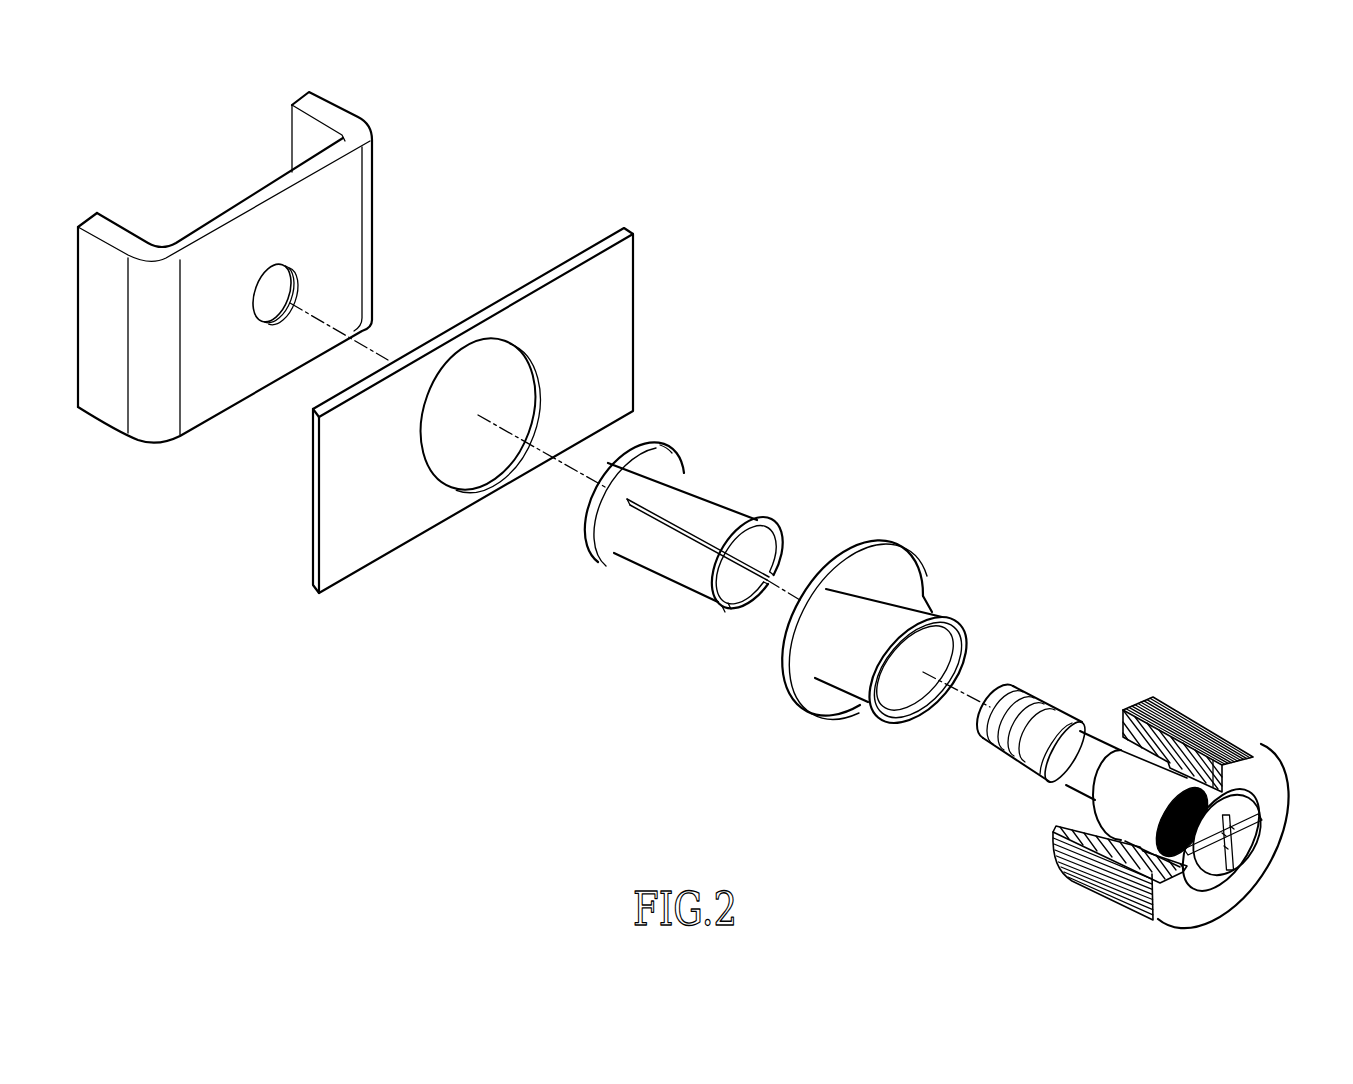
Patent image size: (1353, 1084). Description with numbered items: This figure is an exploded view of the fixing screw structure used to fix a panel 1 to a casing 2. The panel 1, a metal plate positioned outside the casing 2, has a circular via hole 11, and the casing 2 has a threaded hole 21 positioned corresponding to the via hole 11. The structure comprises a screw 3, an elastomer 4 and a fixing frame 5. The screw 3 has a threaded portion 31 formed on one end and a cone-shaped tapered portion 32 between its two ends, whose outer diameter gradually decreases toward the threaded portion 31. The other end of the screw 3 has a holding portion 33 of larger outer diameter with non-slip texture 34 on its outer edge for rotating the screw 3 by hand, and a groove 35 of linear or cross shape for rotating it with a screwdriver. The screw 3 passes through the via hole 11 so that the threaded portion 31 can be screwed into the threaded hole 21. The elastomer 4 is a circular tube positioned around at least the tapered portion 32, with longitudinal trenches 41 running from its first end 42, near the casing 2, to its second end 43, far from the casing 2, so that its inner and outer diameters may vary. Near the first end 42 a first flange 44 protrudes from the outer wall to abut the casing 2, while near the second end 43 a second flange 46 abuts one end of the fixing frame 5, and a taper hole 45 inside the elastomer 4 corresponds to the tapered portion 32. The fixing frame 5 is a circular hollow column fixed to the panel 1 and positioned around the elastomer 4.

The panel 1 is at (567, 255).
The via hole 11 is at (484, 469).
The casing 2 is at (380, 177).
The threaded hole 21 is at (278, 282).
The elastomer 4 is at (715, 531).
The trench 41 is at (685, 540).
The first end 42 is at (635, 442).
The second end 43 is at (742, 610).
The first flange 44 is at (668, 443).
The taper hole 45 is at (757, 548).
The second flange 46 is at (752, 510).
The fixing frame 5 is at (942, 563).
The screw 3 is at (1155, 757).
The threaded portion 31 is at (1032, 715).
The tapered portion 32 is at (1120, 775).
The holding portion 33 is at (1198, 710).
The non-slip texture 34 is at (1190, 737).
The groove 35 is at (1233, 857).